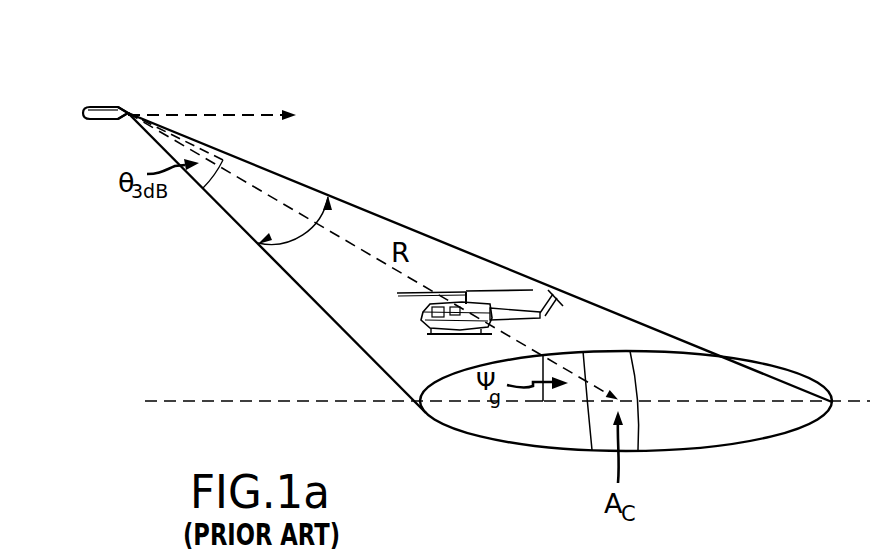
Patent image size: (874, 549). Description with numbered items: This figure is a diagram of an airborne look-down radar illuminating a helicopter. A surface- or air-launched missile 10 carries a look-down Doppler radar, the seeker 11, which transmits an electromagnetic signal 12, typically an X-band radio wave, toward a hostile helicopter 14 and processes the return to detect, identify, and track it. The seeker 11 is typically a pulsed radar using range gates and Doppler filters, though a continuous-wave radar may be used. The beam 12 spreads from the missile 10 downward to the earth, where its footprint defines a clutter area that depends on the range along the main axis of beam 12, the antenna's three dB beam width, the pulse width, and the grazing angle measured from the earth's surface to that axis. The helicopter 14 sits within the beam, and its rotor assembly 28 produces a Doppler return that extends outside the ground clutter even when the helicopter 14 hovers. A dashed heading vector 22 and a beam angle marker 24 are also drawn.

The missile 10 is at (93, 120).
The seeker 11 is at (137, 112).
The electromagnetic signal 12 is at (372, 257).
The helicopter 14 is at (457, 331).
The missile velocity vector 22 is at (268, 115).
The beam angle 24 is at (287, 237).
The rotor assembly 28 is at (472, 288).